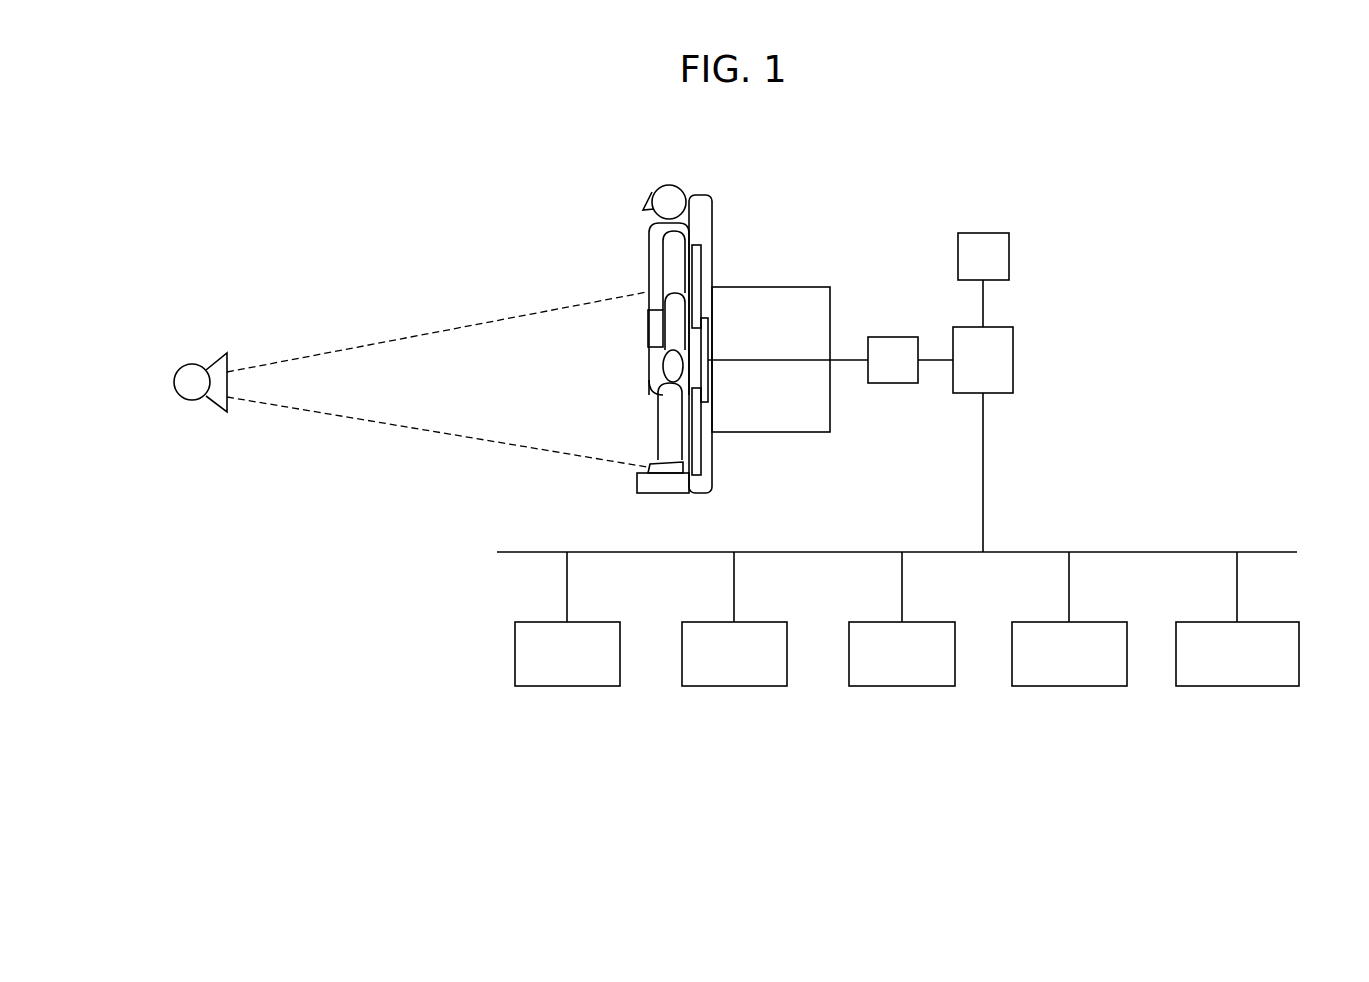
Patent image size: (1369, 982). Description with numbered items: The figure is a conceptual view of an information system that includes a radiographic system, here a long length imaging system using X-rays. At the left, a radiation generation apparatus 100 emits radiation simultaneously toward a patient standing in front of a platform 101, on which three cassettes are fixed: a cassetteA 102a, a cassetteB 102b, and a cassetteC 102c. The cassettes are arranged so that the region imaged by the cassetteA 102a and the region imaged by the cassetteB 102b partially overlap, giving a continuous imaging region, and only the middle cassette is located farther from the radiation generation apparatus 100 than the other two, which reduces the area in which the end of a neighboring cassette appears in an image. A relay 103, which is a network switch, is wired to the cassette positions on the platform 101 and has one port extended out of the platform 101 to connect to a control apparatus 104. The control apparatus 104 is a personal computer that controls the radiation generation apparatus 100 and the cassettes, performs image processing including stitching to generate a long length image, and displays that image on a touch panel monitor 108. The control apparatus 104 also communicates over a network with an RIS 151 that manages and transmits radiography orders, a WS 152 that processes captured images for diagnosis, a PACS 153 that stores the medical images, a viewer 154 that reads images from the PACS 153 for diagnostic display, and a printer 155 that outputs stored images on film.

The radiation generation apparatus 100 is at (193, 364).
The platform 101 is at (713, 213).
The cassetteA 102a is at (702, 258).
The cassetteB 102b is at (708, 332).
The cassetteC 102c is at (702, 457).
The relay 103 is at (892, 337).
The control apparatus 104 is at (1013, 362).
The touch panel monitor 108 is at (1009, 256).
The RIS 151 is at (567, 686).
The WS 152 is at (734, 686).
The PACS 153 is at (902, 686).
The viewer 154 is at (1069, 686).
The printer 155 is at (1237, 686).